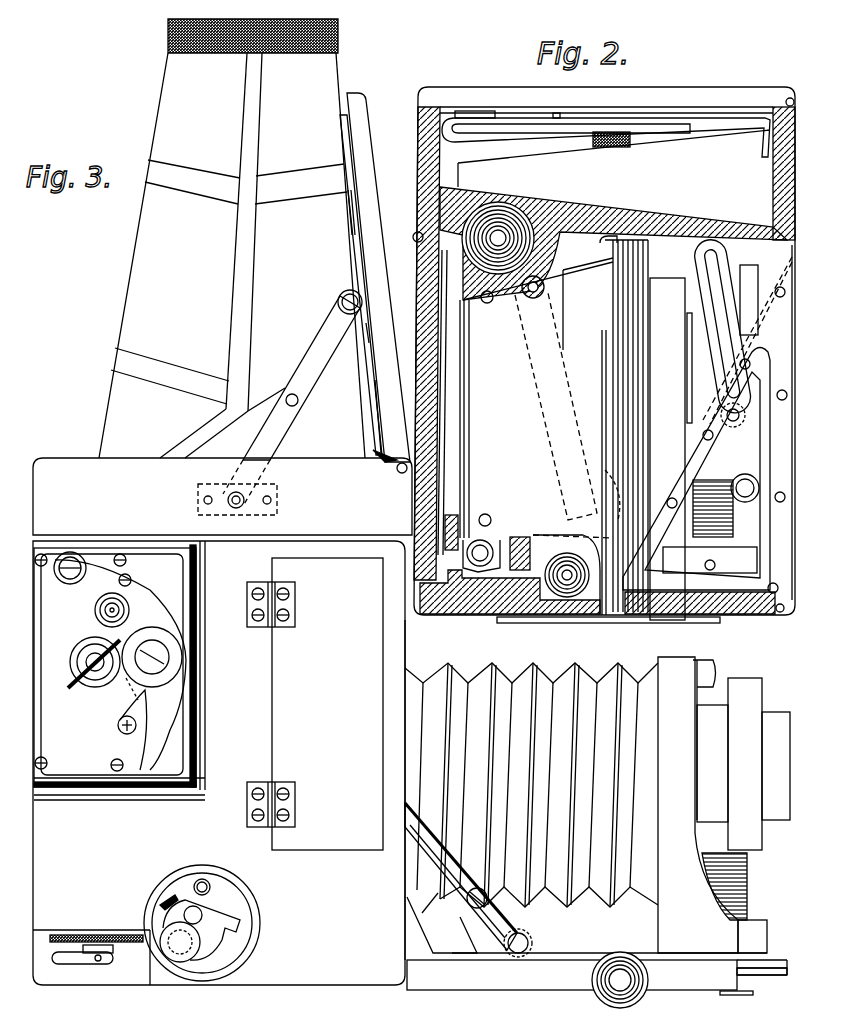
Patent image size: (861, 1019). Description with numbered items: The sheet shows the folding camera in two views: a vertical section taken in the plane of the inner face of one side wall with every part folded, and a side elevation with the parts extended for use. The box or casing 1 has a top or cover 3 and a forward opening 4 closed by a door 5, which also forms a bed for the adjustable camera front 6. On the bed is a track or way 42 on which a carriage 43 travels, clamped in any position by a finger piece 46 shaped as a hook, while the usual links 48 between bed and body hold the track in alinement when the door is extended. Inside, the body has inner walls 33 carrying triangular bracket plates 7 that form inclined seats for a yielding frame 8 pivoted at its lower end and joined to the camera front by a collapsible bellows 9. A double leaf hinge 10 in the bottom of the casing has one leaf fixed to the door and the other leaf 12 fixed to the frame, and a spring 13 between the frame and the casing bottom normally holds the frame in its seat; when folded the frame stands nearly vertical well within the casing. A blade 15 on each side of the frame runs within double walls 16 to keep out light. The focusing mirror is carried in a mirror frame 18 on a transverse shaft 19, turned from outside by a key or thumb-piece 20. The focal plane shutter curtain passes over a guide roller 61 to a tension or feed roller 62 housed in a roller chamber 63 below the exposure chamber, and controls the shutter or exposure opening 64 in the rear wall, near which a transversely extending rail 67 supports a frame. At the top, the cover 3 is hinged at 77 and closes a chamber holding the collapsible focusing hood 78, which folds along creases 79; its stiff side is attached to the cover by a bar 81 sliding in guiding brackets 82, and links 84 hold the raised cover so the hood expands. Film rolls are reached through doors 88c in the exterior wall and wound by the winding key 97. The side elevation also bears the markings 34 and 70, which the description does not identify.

In FIG. 3, the box or casing 1 is at (222, 721).
In FIG. 2, the box or casing 1 is at (770, 173).
In FIG. 3, the top or cover 3 is at (358, 152).
In FIG. 2, the top or cover 3 is at (677, 98).
In FIG. 2, the forward opening 4 is at (792, 618).
In FIG. 2, the door 5 is at (597, 980).
In FIG. 2, the camera front 6 is at (712, 805).
In FIG. 2, the triangular bracket plates 7 is at (693, 478).
In FIG. 2, the yielding frame 8 is at (617, 343).
In FIG. 2, the collapsible bellows 9 is at (580, 692).
In FIG. 2, the double leaf hinge 10 is at (743, 618).
In FIG. 2, the hinge leaf 12 is at (648, 621).
In FIG. 2, the spring 13 is at (603, 621).
In FIG. 2, the blade 15 is at (565, 303).
In FIG. 2, the double walls 16 is at (530, 303).
In FIG. 2, the mirror frame 18 is at (548, 430).
In FIG. 2, the shaft 19 is at (743, 764).
In FIG. 3, the key or thumb-piece 20 is at (70, 688).
In FIG. 2, the inner walls 33 is at (671, 429).
In FIG. 3, the winding knob 34 is at (188, 838).
In FIG. 2, the track or way 42 is at (767, 962).
In FIG. 2, the carriage 43 is at (710, 560).
In FIG. 2, the finger piece 46 is at (720, 700).
In FIG. 2, the links 48 is at (733, 253).
In FIG. 2, the guide roller 61 is at (480, 546).
In FIG. 2, the tension or feed roller 62 is at (565, 557).
In FIG. 2, the roller chamber 63 is at (566, 577).
In FIG. 2, the shutter or exposure opening 64 is at (471, 435).
In FIG. 2, the rail 67 is at (519, 578).
In FIG. 2, the bottom wall 70 is at (426, 580).
In FIG. 3, the hinge 77 is at (398, 470).
In FIG. 3, the collapsible focusing hood 78 is at (182, 241).
In FIG. 3, the creases 79 is at (243, 291).
In FIG. 3, the bar 81 is at (352, 207).
In FIG. 2, the bar 81 is at (480, 108).
In FIG. 3, the guiding brackets 82 is at (350, 226).
In FIG. 2, the guiding brackets 82 is at (563, 118).
In FIG. 3, the links 84 is at (312, 374).
In FIG. 3, the doors 88c is at (315, 704).
In FIG. 3, the winding key 97 is at (74, 966).